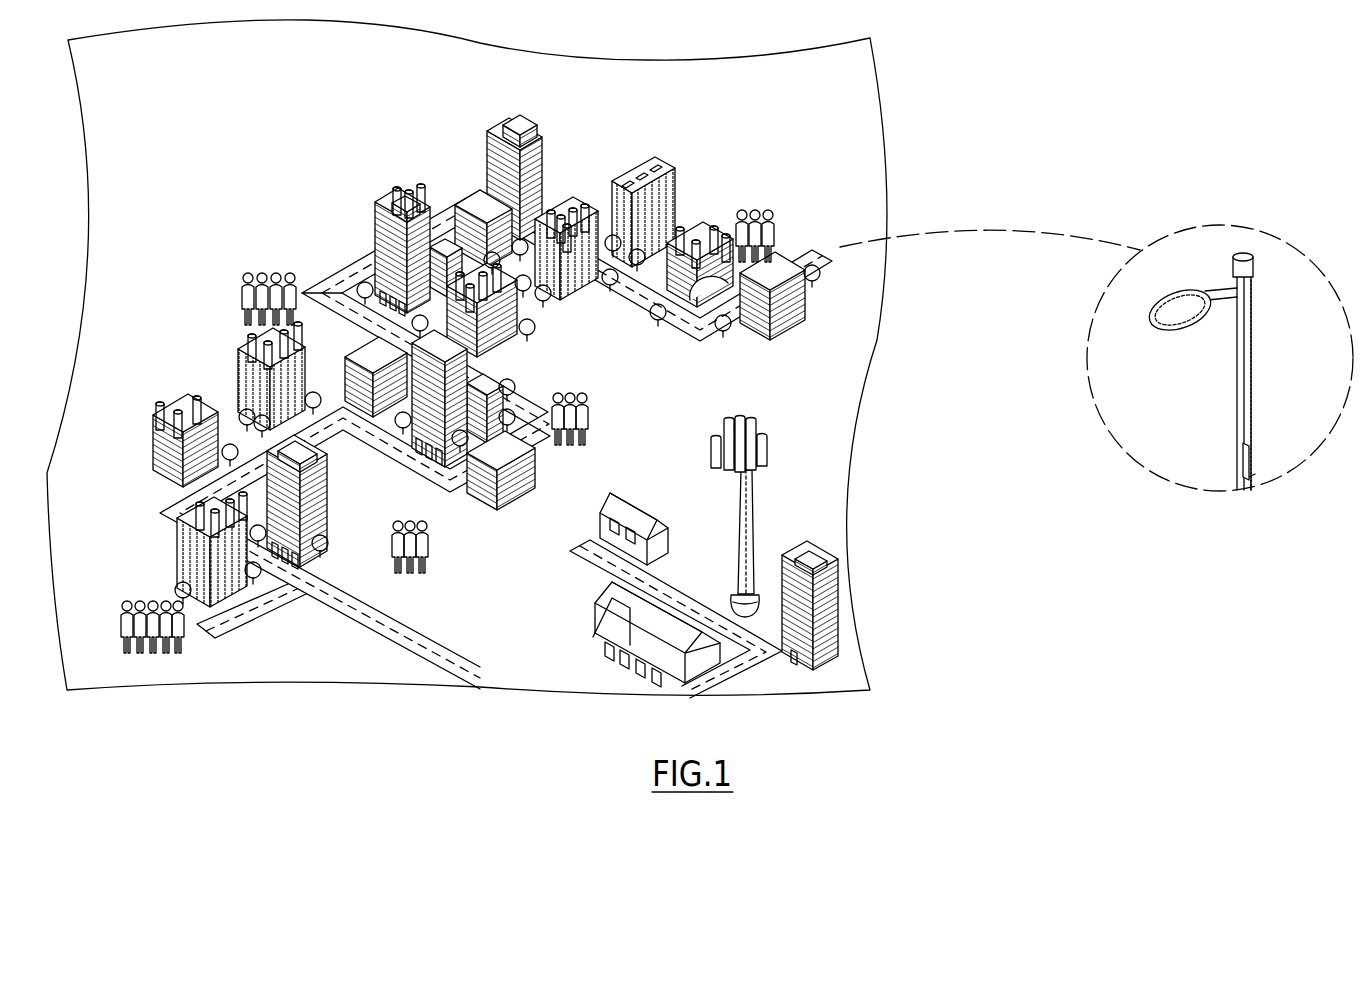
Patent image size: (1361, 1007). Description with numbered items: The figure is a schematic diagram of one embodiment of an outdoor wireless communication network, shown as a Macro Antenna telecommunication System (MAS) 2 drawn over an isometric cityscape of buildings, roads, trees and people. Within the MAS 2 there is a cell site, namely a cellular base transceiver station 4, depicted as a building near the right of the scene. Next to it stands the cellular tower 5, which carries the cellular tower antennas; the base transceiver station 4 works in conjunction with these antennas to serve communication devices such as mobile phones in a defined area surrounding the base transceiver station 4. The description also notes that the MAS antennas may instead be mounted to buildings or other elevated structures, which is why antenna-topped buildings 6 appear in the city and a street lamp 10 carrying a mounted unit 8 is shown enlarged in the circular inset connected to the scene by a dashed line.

The Macro Antenna telecommunication System (MAS) 2 is at (738, 78).
The cellular base transceiver station 4 is at (797, 566).
The cellular tower 5 is at (727, 428).
The buildings with antenna nodes 6 is at (395, 194).
The node device on top of light pole 8 is at (1255, 260).
The light pole 10 is at (1253, 352).